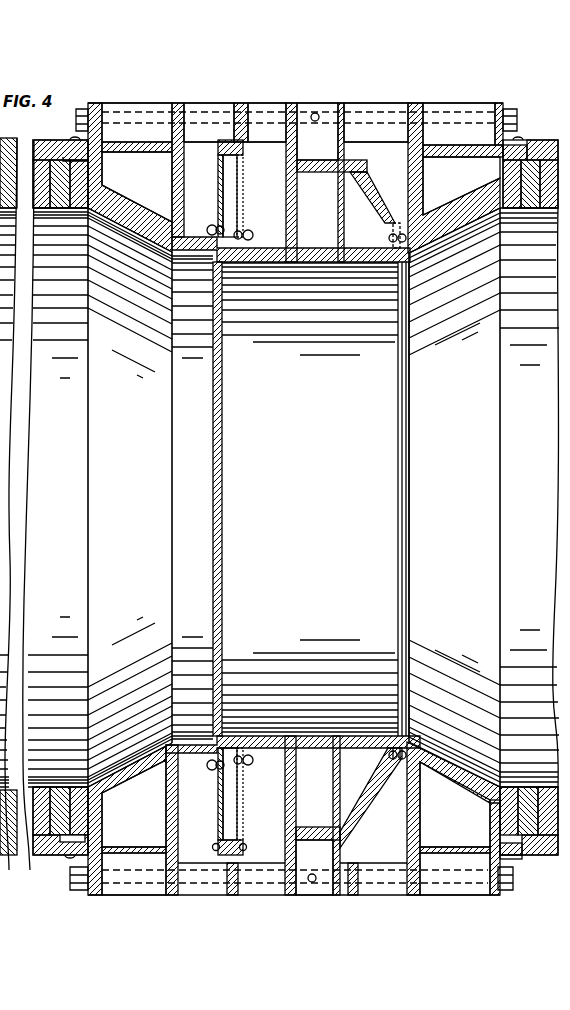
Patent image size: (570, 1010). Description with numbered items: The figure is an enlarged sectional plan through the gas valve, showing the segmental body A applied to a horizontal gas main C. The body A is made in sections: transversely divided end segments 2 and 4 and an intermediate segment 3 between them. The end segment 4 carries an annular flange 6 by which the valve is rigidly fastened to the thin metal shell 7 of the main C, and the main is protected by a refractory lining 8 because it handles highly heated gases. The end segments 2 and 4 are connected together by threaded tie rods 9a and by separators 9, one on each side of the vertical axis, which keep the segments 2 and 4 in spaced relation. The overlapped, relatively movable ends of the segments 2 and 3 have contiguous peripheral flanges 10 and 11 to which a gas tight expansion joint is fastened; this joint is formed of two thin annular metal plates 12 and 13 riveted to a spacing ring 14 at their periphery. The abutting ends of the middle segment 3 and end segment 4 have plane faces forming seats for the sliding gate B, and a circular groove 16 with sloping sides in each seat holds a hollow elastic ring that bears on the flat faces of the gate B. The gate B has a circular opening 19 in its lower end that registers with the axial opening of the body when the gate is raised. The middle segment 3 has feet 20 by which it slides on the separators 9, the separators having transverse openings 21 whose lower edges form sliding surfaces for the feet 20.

The end segment 2 is at (152, 870).
The intermediate segment 3 is at (278, 750).
The end segment 4 is at (460, 855).
The annular flange 6 is at (514, 867).
The metal shell 7 is at (550, 142).
The refractory lining 8 is at (543, 855).
The separator 9 is at (392, 104).
The tie rod 9a is at (518, 121).
The peripheral flange 10 is at (214, 771).
The peripheral flange 11 is at (247, 766).
The annular metal plate 12 is at (218, 811).
The annular metal plate 13 is at (240, 803).
The spacing ring 14 is at (243, 847).
The circular groove 16 is at (398, 228).
The circular opening 19 is at (398, 500).
The foot 20 is at (288, 150).
The transverse opening 21 is at (289, 106).
The segmental body A is at (310, 499).
The sliding gate B is at (371, 798).
The gas main C is at (295, 491).